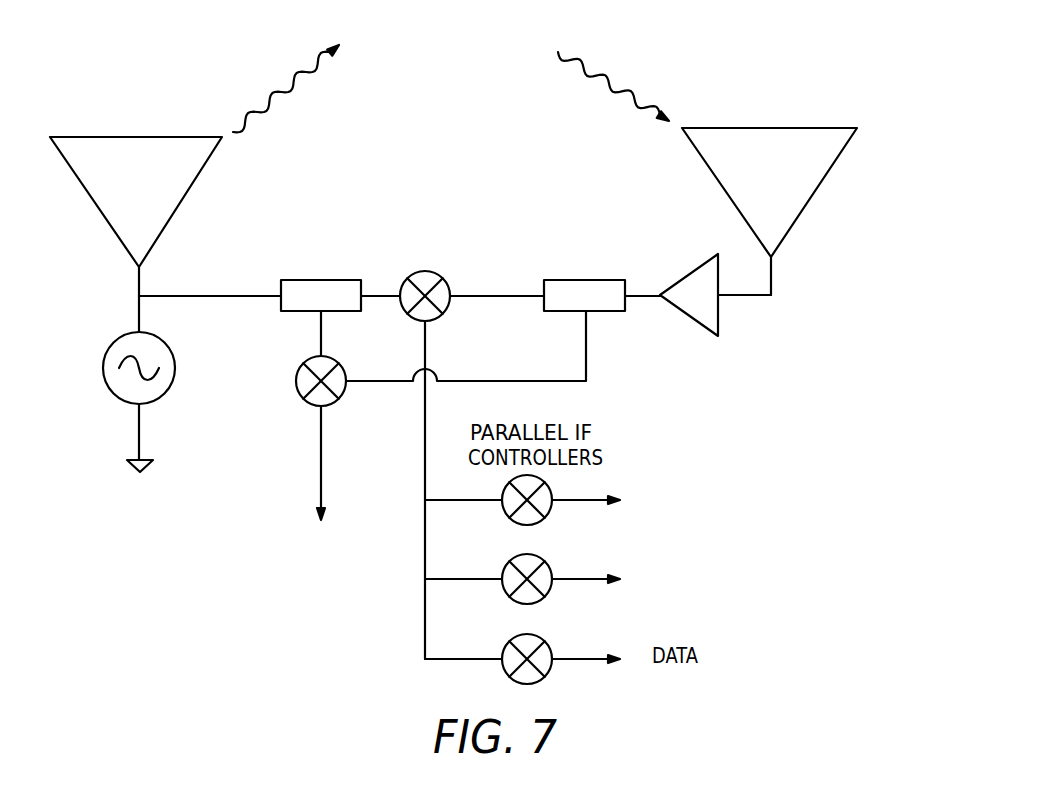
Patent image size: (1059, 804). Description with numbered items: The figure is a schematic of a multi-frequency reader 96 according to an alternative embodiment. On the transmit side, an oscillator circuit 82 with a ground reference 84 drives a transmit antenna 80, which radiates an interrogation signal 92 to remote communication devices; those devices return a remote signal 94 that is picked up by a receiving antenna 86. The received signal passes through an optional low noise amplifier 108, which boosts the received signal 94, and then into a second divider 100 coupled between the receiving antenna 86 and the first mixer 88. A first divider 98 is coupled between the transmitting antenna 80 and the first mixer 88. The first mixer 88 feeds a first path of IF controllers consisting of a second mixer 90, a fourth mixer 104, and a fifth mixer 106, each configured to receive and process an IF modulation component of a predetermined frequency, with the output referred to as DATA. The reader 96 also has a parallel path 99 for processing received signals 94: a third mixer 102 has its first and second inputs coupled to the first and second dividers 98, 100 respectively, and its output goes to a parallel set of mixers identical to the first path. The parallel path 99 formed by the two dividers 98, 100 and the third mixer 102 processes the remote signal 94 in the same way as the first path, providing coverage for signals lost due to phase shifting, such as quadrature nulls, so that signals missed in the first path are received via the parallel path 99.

The transmit antenna 80 is at (182, 200).
The oscillator circuit 82 is at (177, 366).
The ground reference 84 is at (148, 466).
The receiving antenna 86 is at (815, 190).
The first mixer 88 is at (426, 270).
The second mixer 90 is at (545, 518).
The interrogation signal 92 is at (284, 96).
The remote signal 94 is at (611, 78).
The reader 96 is at (422, 128).
The first divider 98 is at (343, 276).
The parallel path 99 is at (350, 422).
The second divider 100 is at (606, 274).
The third mixer 102 is at (339, 364).
The fourth mixer 104 is at (545, 597).
The fifth mixer 106 is at (545, 677).
The low noise amplifier 108 is at (720, 305).